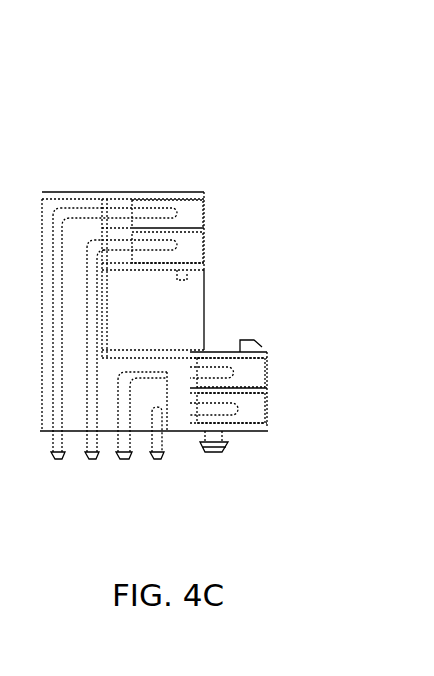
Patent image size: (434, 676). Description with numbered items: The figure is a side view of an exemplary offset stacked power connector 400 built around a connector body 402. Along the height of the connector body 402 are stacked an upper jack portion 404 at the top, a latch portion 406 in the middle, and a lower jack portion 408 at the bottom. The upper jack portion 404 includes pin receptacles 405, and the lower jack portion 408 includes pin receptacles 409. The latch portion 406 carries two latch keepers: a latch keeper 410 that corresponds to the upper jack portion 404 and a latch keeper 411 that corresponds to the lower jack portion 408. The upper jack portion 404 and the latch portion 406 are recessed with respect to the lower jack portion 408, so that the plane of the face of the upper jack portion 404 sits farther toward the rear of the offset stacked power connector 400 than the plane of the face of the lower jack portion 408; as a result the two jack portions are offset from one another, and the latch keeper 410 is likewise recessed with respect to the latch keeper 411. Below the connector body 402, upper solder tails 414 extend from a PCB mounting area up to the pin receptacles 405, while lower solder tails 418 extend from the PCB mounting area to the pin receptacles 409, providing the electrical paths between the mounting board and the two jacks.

The offset stacked power connector 400 is at (90, 86).
The connector body 402 is at (175, 323).
The upper jack portion 404 is at (218, 204).
The pin receptacles 405 is at (188, 247).
The latch portion 406 is at (218, 279).
The lower jack portion 408 is at (271, 360).
The pin receptacles 409 is at (257, 377).
The latch keeper 410 is at (188, 275).
The latch keeper 411 is at (260, 347).
The upper solder tails 414 is at (98, 243).
The lower solder tails 418 is at (156, 449).